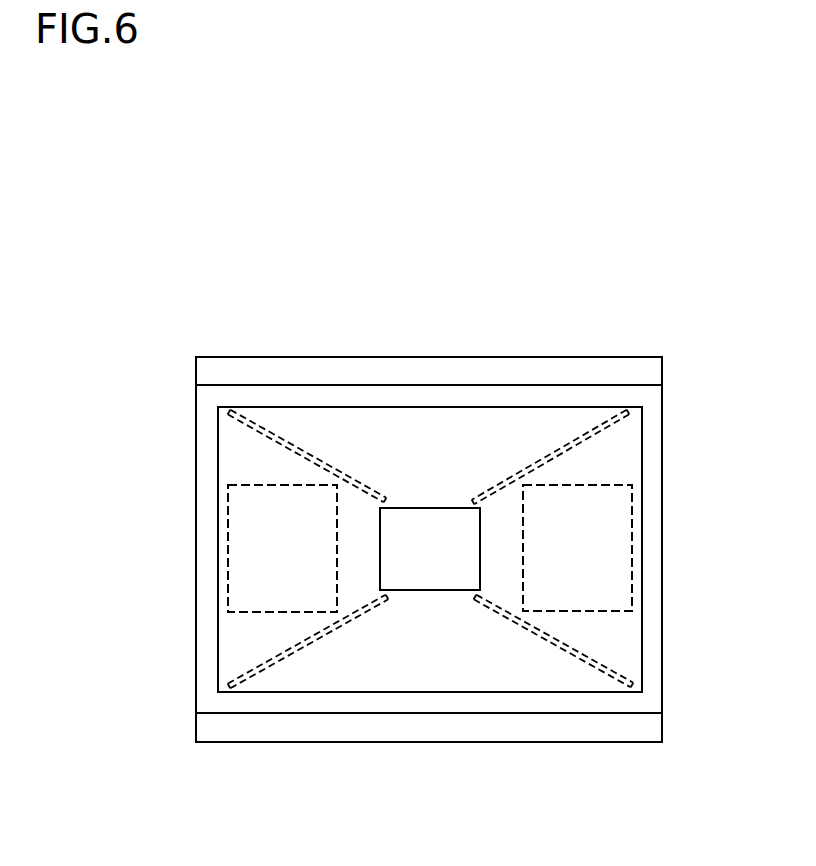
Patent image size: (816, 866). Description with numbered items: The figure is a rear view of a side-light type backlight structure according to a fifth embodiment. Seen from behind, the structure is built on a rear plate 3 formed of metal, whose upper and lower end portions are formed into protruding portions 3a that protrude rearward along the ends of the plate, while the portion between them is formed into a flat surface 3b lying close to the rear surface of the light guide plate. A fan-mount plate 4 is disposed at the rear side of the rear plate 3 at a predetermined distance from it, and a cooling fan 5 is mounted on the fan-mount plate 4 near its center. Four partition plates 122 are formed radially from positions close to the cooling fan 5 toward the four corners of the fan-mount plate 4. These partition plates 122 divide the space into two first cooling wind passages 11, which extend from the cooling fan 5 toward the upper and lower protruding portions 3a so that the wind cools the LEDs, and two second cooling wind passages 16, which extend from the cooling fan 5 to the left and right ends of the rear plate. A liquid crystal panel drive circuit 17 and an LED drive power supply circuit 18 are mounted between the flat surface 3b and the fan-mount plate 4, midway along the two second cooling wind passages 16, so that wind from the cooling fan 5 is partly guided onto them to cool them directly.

The rear plate 3 is at (581, 354).
The protruding portions 3a is at (640, 372).
The flat surface 3b is at (640, 697).
The fan-mount plate 4 is at (613, 626).
The cooling fan 5 is at (424, 565).
The first cooling wind passages 11 is at (428, 438).
The second cooling wind passages 16 is at (250, 631).
The liquid crystal panel drive circuit 17 is at (300, 553).
The LED drive power supply circuit 18 is at (603, 552).
The partition plates 122 is at (290, 449).